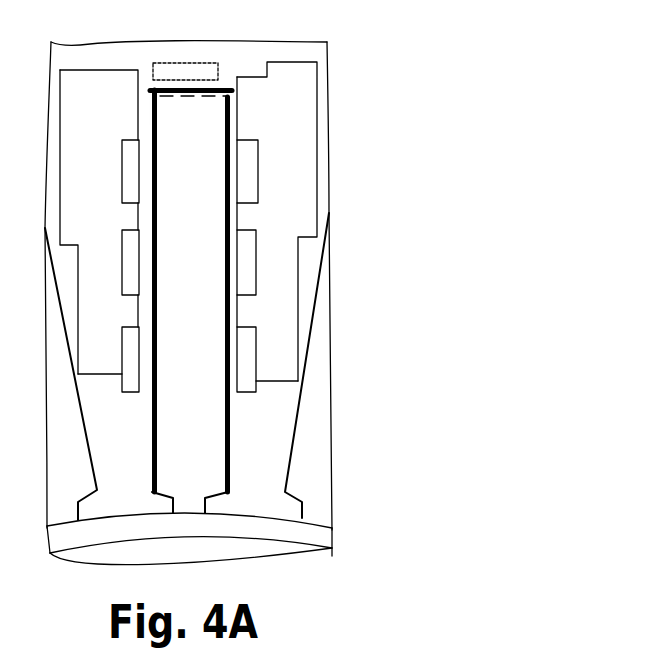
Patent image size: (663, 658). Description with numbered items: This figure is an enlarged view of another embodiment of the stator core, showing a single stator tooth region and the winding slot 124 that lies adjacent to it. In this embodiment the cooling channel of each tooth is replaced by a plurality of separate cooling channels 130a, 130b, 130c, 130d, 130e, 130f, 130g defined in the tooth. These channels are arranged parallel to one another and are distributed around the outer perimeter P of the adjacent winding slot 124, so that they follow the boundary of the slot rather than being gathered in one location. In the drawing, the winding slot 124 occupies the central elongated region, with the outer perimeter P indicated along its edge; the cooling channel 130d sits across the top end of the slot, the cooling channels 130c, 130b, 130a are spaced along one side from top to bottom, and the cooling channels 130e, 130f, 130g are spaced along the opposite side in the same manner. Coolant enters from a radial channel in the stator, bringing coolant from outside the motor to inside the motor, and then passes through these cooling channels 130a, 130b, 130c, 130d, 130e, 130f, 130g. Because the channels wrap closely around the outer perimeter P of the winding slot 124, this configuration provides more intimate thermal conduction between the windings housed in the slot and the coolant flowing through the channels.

The outer perimeter P is at (150, 112).
The winding slot 124 is at (221, 94).
The cooling channel 130a is at (122, 356).
The cooling channel 130b is at (122, 257).
The cooling channel 130c is at (122, 155).
The cooling channel 130d is at (201, 63).
The cooling channel 130e is at (258, 153).
The cooling channel 130f is at (256, 258).
The cooling channel 130g is at (256, 356).